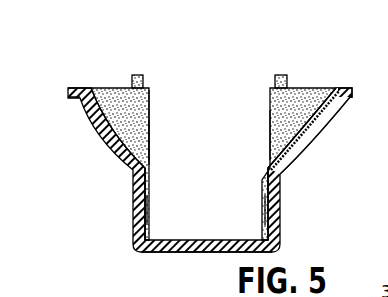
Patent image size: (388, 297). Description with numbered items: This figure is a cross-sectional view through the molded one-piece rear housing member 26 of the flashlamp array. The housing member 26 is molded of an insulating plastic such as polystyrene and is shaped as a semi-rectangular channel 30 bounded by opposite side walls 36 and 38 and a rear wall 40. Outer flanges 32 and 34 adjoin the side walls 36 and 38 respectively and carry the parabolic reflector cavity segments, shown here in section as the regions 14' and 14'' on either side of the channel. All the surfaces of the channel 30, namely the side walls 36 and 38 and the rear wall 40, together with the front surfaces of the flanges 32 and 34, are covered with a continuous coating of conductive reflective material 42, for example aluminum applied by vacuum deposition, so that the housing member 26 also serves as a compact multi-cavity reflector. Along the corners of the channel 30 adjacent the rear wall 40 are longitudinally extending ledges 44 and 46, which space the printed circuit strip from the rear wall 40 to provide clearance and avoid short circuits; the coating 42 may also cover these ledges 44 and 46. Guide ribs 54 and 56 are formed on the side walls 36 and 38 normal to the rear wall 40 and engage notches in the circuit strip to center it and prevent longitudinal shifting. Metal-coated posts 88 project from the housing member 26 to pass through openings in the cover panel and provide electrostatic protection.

The rear housing member 26 is at (134, 256).
The channel 30 is at (150, 114).
The outer flange 32 is at (67, 96).
The outer flange 34 is at (356, 91).
The side wall 36 is at (148, 143).
The side wall 38 is at (271, 134).
The rear wall 40 is at (197, 247).
The coating of conductive reflective material 42 is at (75, 88).
The ledge 44 is at (150, 244).
The ledge 46 is at (262, 241).
The guide rib 54 is at (148, 212).
The guide rib 56 is at (266, 212).
The metal-coated post 88 is at (141, 75).
The left insert member 14' is at (118, 137).
The right insert member 14'' is at (299, 127).